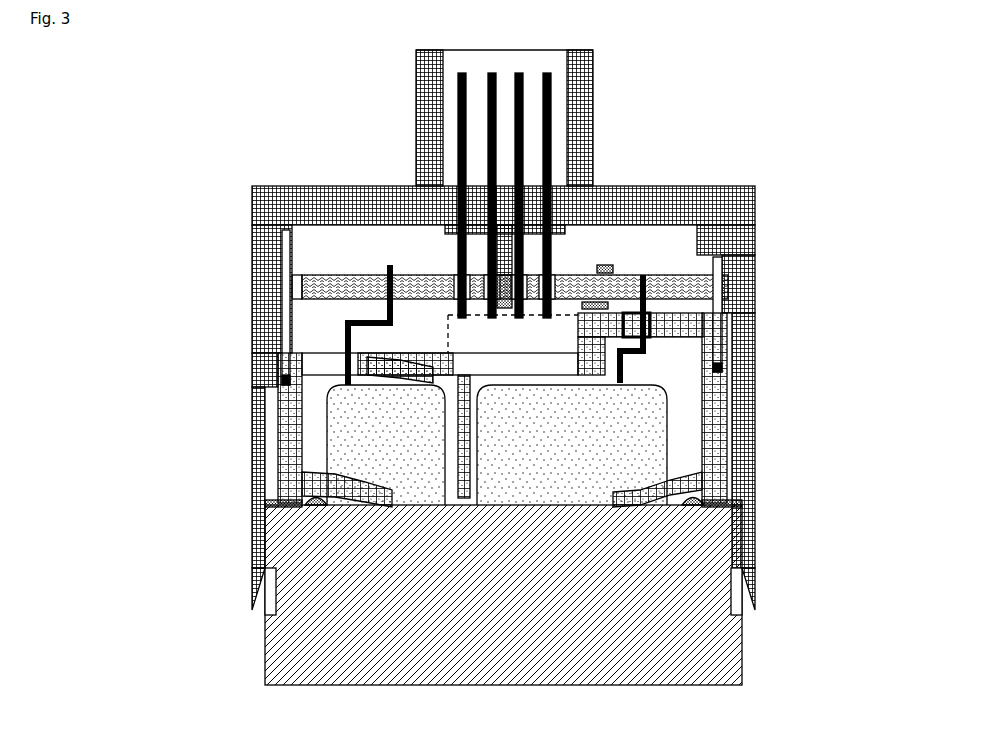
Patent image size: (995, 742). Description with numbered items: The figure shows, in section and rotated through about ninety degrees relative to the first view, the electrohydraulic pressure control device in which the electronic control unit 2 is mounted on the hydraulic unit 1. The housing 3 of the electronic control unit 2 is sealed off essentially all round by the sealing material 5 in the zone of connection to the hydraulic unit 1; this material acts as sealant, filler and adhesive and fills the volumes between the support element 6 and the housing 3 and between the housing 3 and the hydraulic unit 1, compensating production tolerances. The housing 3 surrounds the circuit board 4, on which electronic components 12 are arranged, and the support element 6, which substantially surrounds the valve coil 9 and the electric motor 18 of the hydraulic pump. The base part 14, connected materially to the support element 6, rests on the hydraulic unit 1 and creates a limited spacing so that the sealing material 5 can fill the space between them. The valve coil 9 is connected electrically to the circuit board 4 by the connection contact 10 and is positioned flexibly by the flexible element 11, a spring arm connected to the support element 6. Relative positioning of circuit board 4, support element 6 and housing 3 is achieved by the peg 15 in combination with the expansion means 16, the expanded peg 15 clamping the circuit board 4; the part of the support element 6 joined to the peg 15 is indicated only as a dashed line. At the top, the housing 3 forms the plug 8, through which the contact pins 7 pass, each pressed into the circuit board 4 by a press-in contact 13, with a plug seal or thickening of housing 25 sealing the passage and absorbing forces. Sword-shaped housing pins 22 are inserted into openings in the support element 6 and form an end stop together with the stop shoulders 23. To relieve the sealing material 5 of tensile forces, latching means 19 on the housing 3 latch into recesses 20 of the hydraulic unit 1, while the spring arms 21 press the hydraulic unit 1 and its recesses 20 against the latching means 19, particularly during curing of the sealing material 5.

The hydraulic unit 1 is at (742, 652).
The electronic control unit 2 is at (675, 242).
The housing 3 is at (757, 207).
The circuit board 4 is at (332, 274).
The sealing material 5 is at (282, 503).
The support element 6 is at (672, 336).
The contact pins 7 is at (553, 172).
The plug 8 is at (582, 84).
The valve coil 9 is at (335, 430).
The connection contact 10 is at (348, 332).
The flexible element 11 is at (378, 367).
The electronic components 12 is at (612, 268).
The press-in contact 13 is at (462, 320).
The base part 14 is at (290, 512).
The peg 15 is at (508, 320).
The expansion means 16 is at (505, 255).
The electric motor 18 is at (655, 422).
The latching means 19 is at (257, 578).
The recesses 20 is at (270, 603).
The spring arms 21 is at (320, 482).
The housing pins 22 is at (285, 375).
The stop shoulders 23 is at (286, 362).
The plug seal or thickening of housing 25 is at (556, 233).